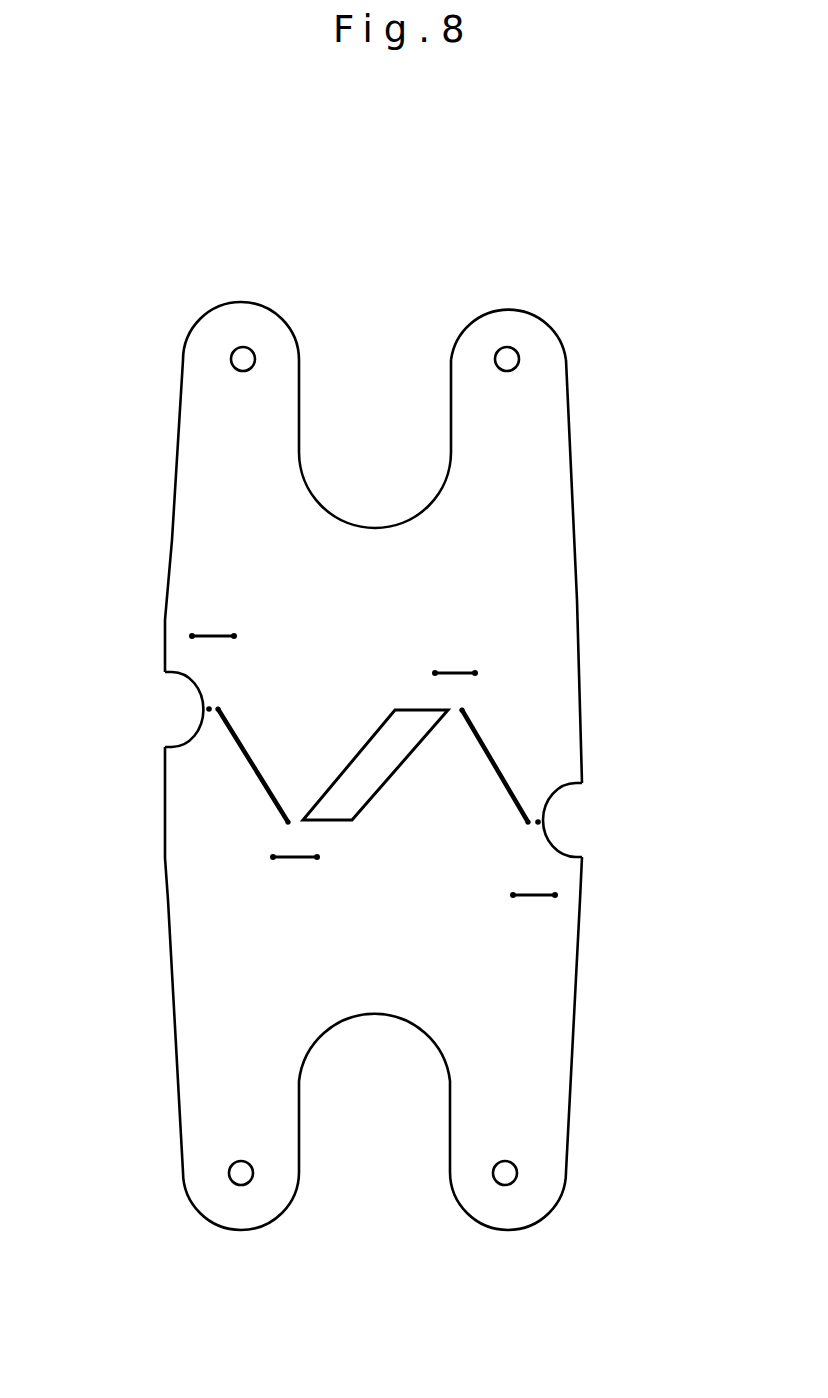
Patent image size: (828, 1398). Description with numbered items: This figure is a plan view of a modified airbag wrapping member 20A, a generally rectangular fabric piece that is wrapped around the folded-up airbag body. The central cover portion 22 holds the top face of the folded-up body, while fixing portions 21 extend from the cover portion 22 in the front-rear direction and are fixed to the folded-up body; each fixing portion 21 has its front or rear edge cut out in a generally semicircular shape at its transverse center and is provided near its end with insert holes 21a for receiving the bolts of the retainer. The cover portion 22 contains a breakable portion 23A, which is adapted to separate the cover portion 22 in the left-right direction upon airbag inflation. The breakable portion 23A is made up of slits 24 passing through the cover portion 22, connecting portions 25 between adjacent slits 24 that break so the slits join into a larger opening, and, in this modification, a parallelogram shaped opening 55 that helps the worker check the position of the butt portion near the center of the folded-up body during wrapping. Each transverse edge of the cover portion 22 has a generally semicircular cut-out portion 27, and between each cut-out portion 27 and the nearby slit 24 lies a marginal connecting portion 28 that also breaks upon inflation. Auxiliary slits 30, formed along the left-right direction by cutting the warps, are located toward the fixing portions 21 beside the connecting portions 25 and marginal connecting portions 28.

The wrapping member 20A is at (597, 408).
The fixing portion 21 is at (548, 305).
The insert hole 21a is at (242, 347).
The cover portion 22 is at (597, 750).
The breakable portion 23A is at (243, 767).
The slit 24 is at (495, 757).
The connecting portion 25 is at (297, 822).
The cut-out portion 27 is at (189, 681).
The marginal connecting portion 28 is at (206, 709).
The auxiliary slit 30 is at (214, 634).
The opening 55 is at (383, 768).